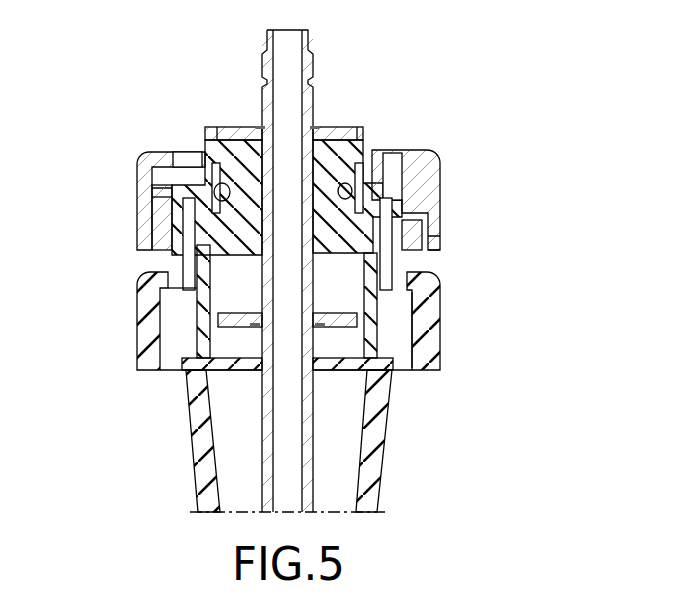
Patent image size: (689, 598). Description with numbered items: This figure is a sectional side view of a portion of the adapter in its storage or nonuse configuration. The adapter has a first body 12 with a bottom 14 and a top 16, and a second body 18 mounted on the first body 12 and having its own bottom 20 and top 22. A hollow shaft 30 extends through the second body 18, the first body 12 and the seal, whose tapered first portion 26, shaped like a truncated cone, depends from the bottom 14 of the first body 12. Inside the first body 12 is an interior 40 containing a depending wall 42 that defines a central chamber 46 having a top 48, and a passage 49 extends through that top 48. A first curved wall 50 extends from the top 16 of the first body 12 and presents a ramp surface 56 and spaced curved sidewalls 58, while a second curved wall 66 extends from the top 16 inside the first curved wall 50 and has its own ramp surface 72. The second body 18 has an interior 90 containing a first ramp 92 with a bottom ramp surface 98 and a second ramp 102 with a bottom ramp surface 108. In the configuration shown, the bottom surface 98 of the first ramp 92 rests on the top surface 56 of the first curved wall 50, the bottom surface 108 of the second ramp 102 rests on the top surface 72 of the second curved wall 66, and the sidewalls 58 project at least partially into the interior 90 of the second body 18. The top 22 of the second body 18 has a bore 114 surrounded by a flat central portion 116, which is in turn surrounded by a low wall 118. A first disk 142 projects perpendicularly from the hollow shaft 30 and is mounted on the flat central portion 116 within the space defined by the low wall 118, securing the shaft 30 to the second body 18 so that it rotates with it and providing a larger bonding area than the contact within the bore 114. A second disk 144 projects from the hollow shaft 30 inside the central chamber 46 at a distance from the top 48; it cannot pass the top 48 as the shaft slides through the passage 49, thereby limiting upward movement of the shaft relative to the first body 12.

The first body 12 is at (482, 333).
The bottom 14 is at (437, 371).
The top 16 is at (412, 271).
The second body 18 is at (476, 188).
The bottom 20 is at (427, 250).
The top 22 is at (428, 148).
The first portion 26 is at (373, 478).
The hollow shaft 30 is at (308, 35).
The interior 40 is at (437, 365).
The depending wall 42 is at (400, 350).
The central chamber 46 is at (373, 335).
The top 48 is at (350, 300).
The passage 49 is at (262, 252).
The first curved wall 50 is at (168, 222).
The top surface or ramp surface 56 is at (180, 170).
The first and second spaced, curved sidewalls 58 is at (177, 257).
The second curved wall 66 is at (405, 195).
The top or ramp surface 72 is at (207, 148).
The interior 90 is at (162, 207).
The first ramp 92 is at (390, 207).
The bottom surface or ramp surface 98 is at (153, 192).
The second ramp 102 is at (232, 165).
The bottom or ramp surface 108 is at (337, 200).
The bore 114 is at (257, 127).
The flat central portion 116 is at (207, 138).
The low wall 118 is at (360, 140).
The first disk 142 is at (323, 135).
The second disk 144 is at (224, 320).